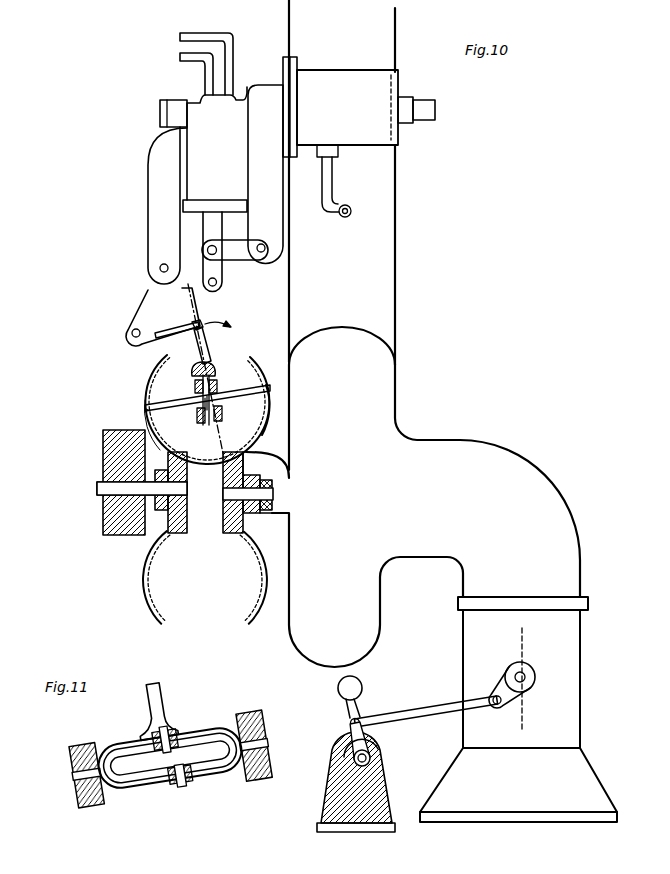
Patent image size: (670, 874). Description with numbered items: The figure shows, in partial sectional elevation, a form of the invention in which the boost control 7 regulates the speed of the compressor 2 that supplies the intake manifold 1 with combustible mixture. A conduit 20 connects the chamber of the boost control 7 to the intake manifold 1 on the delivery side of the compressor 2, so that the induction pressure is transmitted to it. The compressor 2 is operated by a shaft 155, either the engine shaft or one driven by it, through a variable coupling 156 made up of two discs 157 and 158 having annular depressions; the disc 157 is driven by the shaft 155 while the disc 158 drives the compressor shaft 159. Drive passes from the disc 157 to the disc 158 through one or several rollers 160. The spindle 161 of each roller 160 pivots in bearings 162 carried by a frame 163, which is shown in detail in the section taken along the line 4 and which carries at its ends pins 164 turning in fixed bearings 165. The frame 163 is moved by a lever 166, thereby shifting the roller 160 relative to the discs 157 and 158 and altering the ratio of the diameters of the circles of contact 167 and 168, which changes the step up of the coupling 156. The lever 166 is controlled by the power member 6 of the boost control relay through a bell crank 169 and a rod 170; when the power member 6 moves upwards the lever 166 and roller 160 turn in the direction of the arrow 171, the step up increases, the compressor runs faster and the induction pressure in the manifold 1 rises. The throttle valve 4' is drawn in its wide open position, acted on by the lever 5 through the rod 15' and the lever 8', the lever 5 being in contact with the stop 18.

In FIG. 10, the intake manifold 1 is at (375, 257).
In FIG. 10, the compressor 2 is at (375, 403).
In FIG. 10, the section line 4 is at (208, 371).
In FIG. 10, the throttle valve 4' is at (537, 679).
In FIG. 10, the lever 5 is at (354, 710).
In FIG. 10, the power member 6 is at (213, 268).
In FIG. 10, the boost control 7 is at (202, 138).
In FIG. 10, the lever 8' is at (510, 679).
In FIG. 10, the rod 15' is at (424, 723).
In FIG. 10, the stop 18 is at (352, 737).
In FIG. 10, the conduit 20 is at (326, 176).
In FIG. 10, the shaft 155 is at (114, 487).
In FIG. 10, the variable coupling 156 is at (170, 523).
In FIG. 10, the disc 157 is at (148, 383).
In FIG. 10, the disc 158 is at (269, 422).
In FIG. 10, the compressor shaft 159 is at (227, 530).
In FIG. 10, the roller 160 is at (232, 397).
In FIG. 11, the roller 160 is at (127, 768).
In FIG. 10, the spindle 161 is at (178, 459).
In FIG. 11, the spindle 161 is at (171, 787).
In FIG. 10, the bearings 162 is at (198, 387).
In FIG. 11, the bearings 162 is at (178, 733).
In FIG. 11, the frame 163 is at (143, 783).
In FIG. 11, the pins 164 is at (82, 775).
In FIG. 11, the fixed bearings 165 is at (83, 792).
In FIG. 10, the lever 166 is at (196, 343).
In FIG. 11, the lever 166 is at (158, 698).
In FIG. 10, the circle of contact 167 is at (147, 410).
In FIG. 10, the circle of contact 168 is at (268, 391).
In FIG. 10, the bell crank 169 is at (150, 294).
In FIG. 10, the rod 170 is at (164, 328).
In FIG. 10, the arrow 171 is at (232, 319).